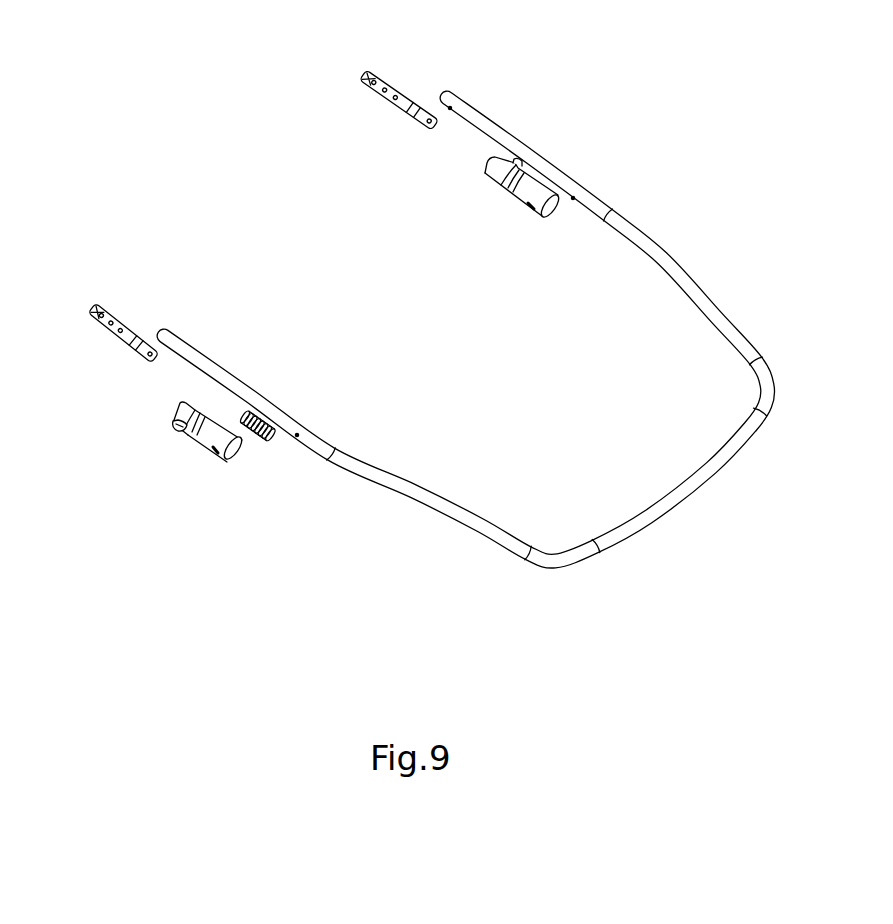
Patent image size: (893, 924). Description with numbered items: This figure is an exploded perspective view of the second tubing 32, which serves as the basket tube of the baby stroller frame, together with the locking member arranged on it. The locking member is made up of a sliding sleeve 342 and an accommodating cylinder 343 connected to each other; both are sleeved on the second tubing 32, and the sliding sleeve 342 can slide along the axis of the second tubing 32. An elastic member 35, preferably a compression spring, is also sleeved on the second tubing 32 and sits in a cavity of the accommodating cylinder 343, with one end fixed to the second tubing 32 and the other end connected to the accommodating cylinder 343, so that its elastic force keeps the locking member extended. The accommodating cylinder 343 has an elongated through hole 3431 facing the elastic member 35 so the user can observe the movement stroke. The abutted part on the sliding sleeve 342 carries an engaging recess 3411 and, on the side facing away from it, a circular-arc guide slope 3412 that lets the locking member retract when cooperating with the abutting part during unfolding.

The second tubing 32 is at (645, 530).
The sliding sleeve 342 is at (521, 163).
The accommodating cylinder 343 is at (623, 125).
The engaging recess 3411 is at (146, 478).
The guide slope 3412 is at (172, 421).
The through hole 3431 is at (216, 465).
The elastic member 35 is at (270, 447).